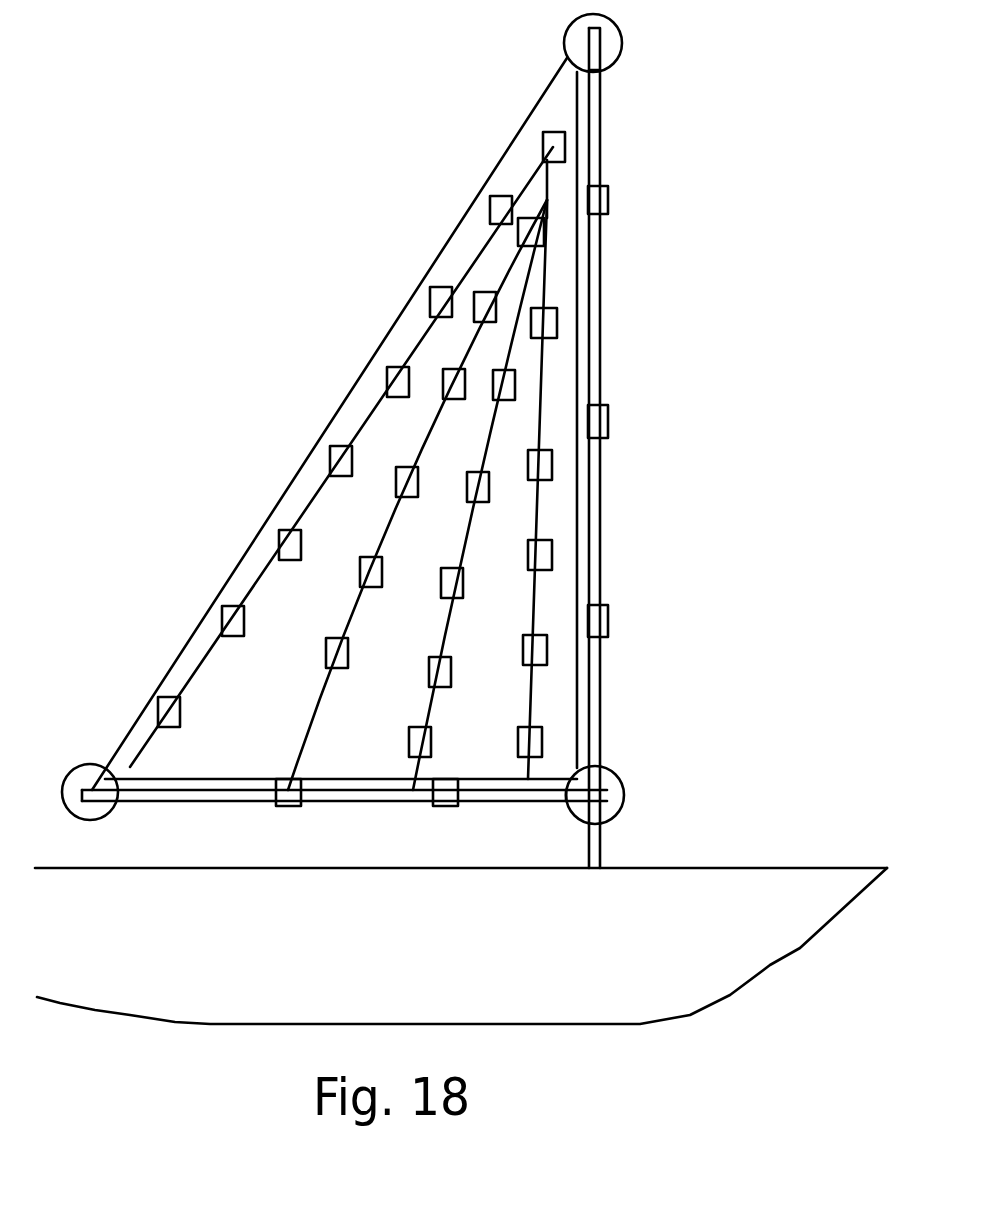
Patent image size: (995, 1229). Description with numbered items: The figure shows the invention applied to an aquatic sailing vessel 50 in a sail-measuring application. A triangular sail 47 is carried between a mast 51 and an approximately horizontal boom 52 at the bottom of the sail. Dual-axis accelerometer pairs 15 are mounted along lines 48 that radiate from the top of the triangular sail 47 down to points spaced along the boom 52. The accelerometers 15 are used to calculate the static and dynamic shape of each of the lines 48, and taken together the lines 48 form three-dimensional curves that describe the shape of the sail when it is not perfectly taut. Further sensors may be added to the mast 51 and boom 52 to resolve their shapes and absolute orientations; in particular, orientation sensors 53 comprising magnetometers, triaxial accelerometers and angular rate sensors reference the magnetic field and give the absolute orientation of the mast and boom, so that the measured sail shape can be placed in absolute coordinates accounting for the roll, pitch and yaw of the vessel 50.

The dual-axis accelerometer pairs 15 is at (258, 528).
The triangular sail 47 is at (397, 330).
The lines 48 is at (312, 497).
The aquatic sailing vessel 50 is at (815, 967).
The mast 51 is at (612, 532).
The boom 52 is at (227, 783).
The orientation sensors 53 is at (627, 62).